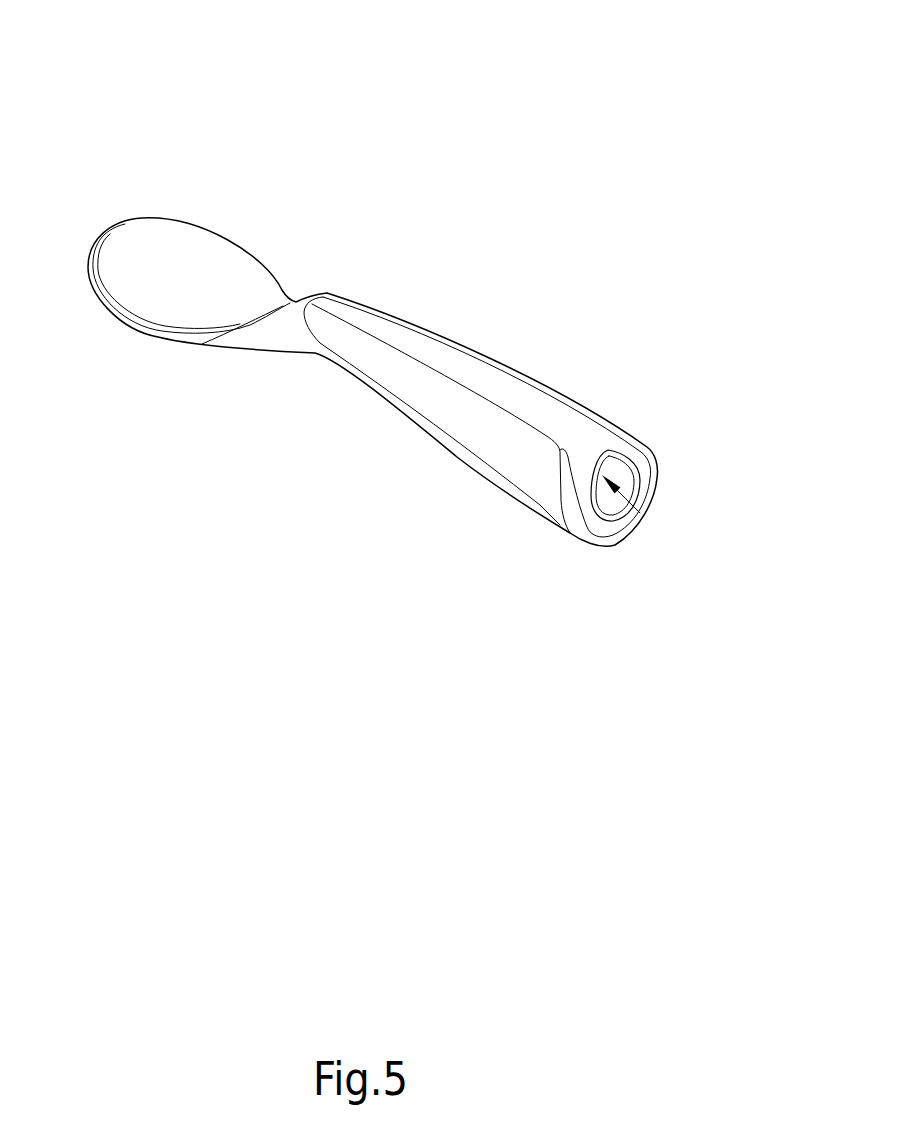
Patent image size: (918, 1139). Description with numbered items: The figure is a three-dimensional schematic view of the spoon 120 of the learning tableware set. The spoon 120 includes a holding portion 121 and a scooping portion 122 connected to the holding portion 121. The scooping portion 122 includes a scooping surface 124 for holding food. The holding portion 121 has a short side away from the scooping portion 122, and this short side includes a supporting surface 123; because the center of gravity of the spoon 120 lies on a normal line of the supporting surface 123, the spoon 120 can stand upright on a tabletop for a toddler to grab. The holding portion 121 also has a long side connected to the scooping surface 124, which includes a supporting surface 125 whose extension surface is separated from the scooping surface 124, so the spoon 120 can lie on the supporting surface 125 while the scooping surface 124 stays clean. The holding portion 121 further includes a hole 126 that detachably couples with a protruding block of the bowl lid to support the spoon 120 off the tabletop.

The spoon 120 is at (453, 119).
The holding portion 121 is at (487, 440).
The scooping portion 122 is at (175, 343).
The supporting surface 123 is at (646, 472).
The scooping surface 124 is at (150, 242).
The supporting surface 125 is at (465, 363).
The hole 126 is at (640, 505).